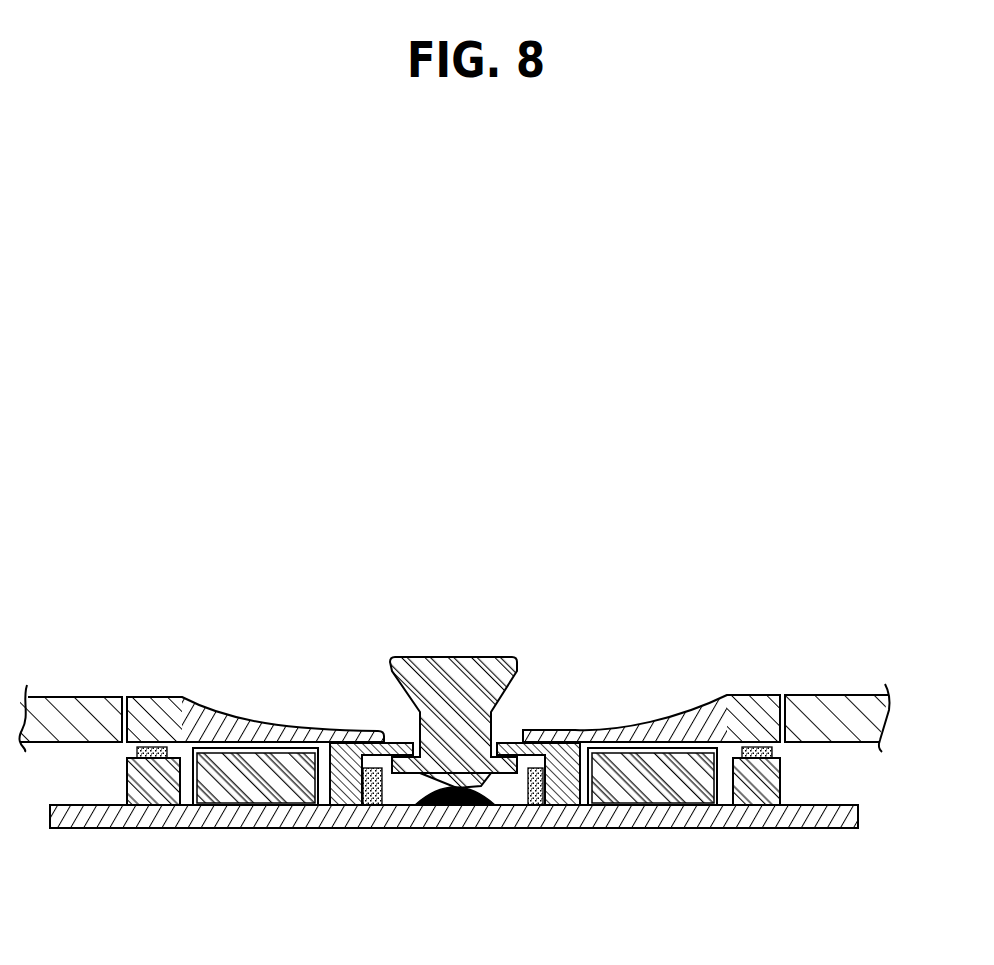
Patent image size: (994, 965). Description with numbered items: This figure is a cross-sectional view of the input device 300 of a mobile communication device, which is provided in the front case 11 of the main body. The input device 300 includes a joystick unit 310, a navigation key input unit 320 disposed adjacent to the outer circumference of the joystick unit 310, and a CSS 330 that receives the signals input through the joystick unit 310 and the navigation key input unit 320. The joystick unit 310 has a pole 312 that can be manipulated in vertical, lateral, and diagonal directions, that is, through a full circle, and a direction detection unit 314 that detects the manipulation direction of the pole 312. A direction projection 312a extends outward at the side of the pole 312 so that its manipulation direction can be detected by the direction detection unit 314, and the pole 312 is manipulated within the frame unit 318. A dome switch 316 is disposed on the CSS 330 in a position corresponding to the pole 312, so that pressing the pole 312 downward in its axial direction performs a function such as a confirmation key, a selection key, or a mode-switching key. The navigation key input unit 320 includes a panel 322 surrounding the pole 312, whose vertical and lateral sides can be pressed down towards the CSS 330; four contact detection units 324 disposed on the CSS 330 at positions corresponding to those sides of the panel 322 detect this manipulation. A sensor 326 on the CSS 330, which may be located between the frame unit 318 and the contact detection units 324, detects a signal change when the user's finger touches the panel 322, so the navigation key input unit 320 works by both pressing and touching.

The input device 300 is at (878, 521).
The joystick unit 310 is at (633, 538).
The pole 312 is at (417, 657).
The direction projection 312a is at (502, 767).
The direction detection unit 314 is at (530, 762).
The dome switch 316 is at (458, 787).
The frame unit 318 is at (560, 753).
The navigation key input unit 320 is at (252, 503).
The panel 322 is at (162, 725).
The contact detection units 324 is at (128, 768).
The sensor 326 is at (242, 752).
The CSS 330 is at (745, 812).
The front case 11 is at (833, 723).